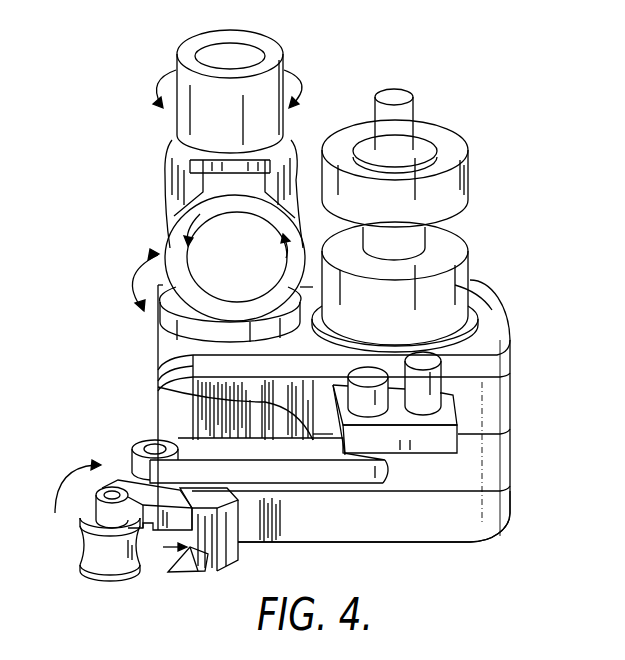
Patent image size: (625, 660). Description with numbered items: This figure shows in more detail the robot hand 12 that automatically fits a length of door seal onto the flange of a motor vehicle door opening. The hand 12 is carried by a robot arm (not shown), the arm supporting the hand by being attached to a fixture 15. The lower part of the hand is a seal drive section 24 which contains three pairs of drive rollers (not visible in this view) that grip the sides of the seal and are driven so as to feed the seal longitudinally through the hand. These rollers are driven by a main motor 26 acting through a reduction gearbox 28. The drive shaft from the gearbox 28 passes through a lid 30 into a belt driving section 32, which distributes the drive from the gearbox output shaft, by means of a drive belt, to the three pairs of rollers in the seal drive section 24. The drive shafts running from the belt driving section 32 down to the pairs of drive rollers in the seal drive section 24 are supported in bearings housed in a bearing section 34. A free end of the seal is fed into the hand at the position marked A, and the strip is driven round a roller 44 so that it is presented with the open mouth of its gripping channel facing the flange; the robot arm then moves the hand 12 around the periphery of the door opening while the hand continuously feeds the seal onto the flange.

The robot hand 12 is at (517, 391).
The fixture 15 is at (203, 168).
The seal drive section 24 is at (490, 517).
The main motor 26 is at (468, 178).
The reduction gearbox 28 is at (470, 267).
The lid 30 is at (492, 310).
The belt driving section 32 is at (503, 380).
The bearing section 34 is at (500, 460).
The roller 44 is at (80, 560).
The seal feed position A is at (512, 490).